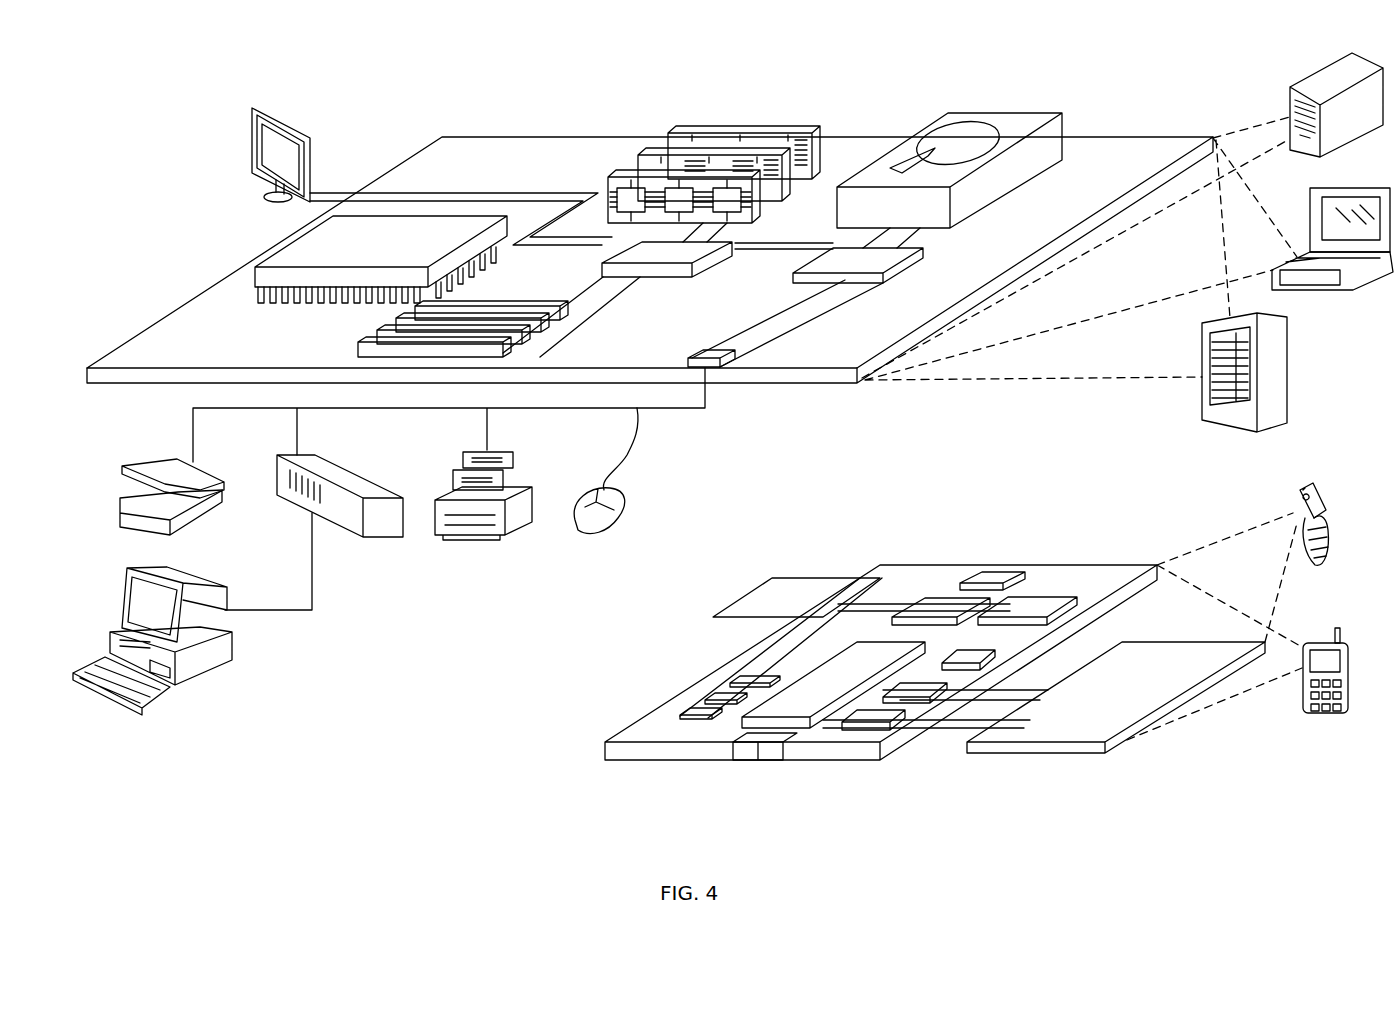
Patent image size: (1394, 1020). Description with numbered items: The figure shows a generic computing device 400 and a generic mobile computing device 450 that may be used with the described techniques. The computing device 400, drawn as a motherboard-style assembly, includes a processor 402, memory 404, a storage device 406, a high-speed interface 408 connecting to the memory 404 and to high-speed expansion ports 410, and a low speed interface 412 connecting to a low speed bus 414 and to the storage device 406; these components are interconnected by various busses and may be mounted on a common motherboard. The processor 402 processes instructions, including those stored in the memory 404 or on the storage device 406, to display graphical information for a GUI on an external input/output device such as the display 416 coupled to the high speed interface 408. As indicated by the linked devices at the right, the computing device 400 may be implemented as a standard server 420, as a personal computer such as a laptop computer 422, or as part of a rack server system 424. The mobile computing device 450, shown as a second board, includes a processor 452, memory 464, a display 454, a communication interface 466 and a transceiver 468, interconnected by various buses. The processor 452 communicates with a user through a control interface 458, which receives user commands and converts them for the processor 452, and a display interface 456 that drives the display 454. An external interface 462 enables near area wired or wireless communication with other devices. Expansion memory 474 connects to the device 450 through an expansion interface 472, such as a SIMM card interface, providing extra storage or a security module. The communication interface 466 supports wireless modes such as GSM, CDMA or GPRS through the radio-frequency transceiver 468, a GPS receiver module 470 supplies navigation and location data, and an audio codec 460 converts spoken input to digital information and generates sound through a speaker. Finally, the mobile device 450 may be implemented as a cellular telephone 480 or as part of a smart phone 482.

The computing device 400 is at (380, 76).
The processor 402 is at (280, 247).
The memory 404 is at (750, 129).
The storage device 406 is at (990, 113).
The high-speed interface 408 is at (681, 255).
The high-speed expansion ports 410 is at (385, 327).
The low speed interface 412 is at (830, 257).
The low speed bus 414 is at (708, 351).
The display 416 is at (257, 107).
The standard server 420 is at (1310, 85).
The laptop computer 422 is at (1370, 188).
The rack server system 424 is at (1290, 371).
The mobile computing device 450 is at (562, 765).
The processor 452 is at (800, 700).
The display 454 is at (1155, 660).
The display interface 456 is at (890, 725).
The control interface 458 is at (940, 695).
The audio codec 460 is at (970, 660).
The external interface 462 is at (760, 747).
The memory 464 is at (710, 697).
The communication interface 466 is at (940, 600).
The transceiver 468 is at (1037, 600).
The GPS receiver module 470 is at (995, 575).
The expansion interface 472 is at (857, 576).
The expansion memory 474 is at (772, 576).
The cellular telephone 480 is at (1305, 486).
The smart phone 482 is at (1322, 640).